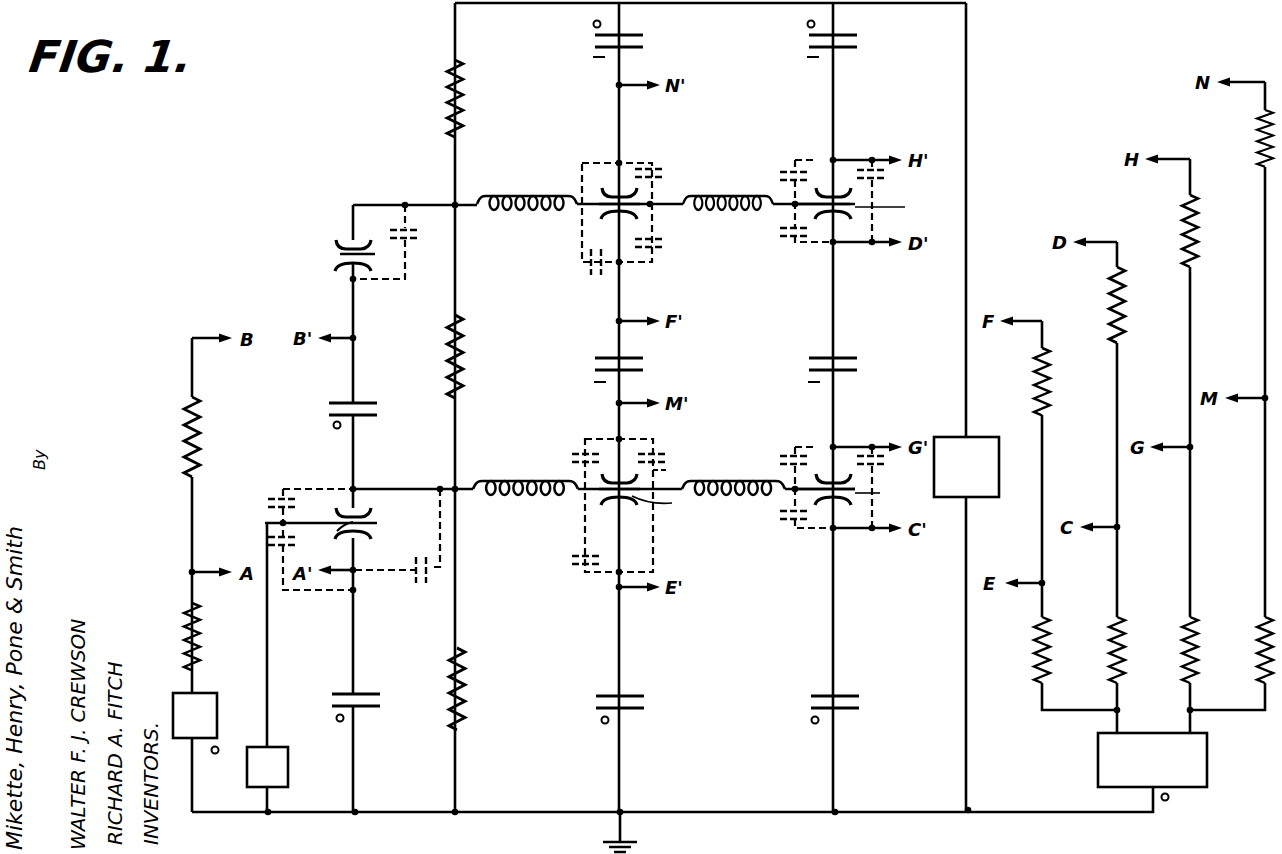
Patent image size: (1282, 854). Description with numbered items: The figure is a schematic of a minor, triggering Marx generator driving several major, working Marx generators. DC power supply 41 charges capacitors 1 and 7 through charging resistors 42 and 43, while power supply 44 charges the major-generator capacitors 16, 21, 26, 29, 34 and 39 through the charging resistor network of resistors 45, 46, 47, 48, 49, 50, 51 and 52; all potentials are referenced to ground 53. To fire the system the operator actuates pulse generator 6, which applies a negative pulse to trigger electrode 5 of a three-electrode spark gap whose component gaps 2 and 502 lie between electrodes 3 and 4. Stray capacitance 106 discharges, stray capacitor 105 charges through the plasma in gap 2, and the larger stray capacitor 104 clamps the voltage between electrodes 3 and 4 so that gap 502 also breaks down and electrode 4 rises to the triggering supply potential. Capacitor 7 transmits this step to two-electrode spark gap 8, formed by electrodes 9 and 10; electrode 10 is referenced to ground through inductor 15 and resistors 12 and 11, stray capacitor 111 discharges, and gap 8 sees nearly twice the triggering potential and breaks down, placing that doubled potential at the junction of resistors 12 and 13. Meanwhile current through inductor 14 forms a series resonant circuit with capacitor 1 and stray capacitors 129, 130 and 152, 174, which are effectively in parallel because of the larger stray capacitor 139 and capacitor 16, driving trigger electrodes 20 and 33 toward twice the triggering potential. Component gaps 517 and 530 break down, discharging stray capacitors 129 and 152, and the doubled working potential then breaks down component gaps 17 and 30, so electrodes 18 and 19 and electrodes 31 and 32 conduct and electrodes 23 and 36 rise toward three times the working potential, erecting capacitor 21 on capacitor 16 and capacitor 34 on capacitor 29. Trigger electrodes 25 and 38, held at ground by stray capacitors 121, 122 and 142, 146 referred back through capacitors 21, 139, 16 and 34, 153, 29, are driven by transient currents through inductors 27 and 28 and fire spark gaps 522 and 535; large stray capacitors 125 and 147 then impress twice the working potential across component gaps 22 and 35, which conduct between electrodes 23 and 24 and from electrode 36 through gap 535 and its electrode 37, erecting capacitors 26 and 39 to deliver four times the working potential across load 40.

The capacitor 1 is at (381, 700).
The spark gap 2 is at (337, 531).
The electrode 3 is at (370, 535).
The electrode 4 is at (364, 514).
The trigger electrode 5 is at (377, 523).
The pulse generator 6 is at (288, 770).
The capacitor 7 is at (378, 408).
The spark gap 8 is at (340, 254).
The spark gap electrode 9 is at (338, 266).
The switch electrode 10 is at (336, 240).
The resistor 11 is at (464, 680).
The resistor 12 is at (462, 350).
The resistor 13 is at (452, 70).
The inductor 14 is at (490, 481).
The inductor 15 is at (490, 196).
The capacitor 16 is at (644, 703).
The spark gap 17 is at (600, 492).
The electrode 18 is at (606, 502).
The electrode 19 is at (602, 474).
The trigger element 20 is at (666, 510).
The capacitor 21 is at (640, 365).
The component gap 22 is at (600, 206).
The electrode 23 is at (605, 215).
The electrode 24 is at (602, 188).
The trigger electrode 25 is at (652, 207).
The capacitor 26 is at (640, 42).
The inductor 27 is at (720, 481).
The inductor 28 is at (700, 196).
The capacitor 29 is at (859, 703).
The component gap 30 is at (800, 495).
The gap electrode 31 is at (825, 502).
The electrode 32 is at (816, 474).
The trigger electrode 33 is at (884, 495).
The capacitor 34 is at (856, 365).
The component gap 35 is at (800, 210).
The gap electrode 36 is at (825, 215).
The anode 37 is at (816, 188).
The trigger electrode 38 is at (895, 213).
The capacitor 39 is at (854, 42).
The load 40 is at (975, 497).
The DC power supply 41 is at (217, 715).
The charging resistor 42 is at (199, 645).
The charging resistor 43 is at (199, 440).
The power supply 44 is at (1207, 763).
The charging resistor 45 is at (1034, 640).
The charging resistor 46 is at (1049, 385).
The charging resistor 47 is at (1124, 650).
The charging resistor 48 is at (1124, 300).
The charging resistor 49 is at (1197, 665).
The charging resistor 50 is at (1197, 235).
The charging resistor 51 is at (1257, 648).
The charging resistor 52 is at (1257, 135).
The ground 53 is at (640, 840).
The stray capacitor 104 is at (415, 585).
The stray capacitor 105 is at (268, 502).
The stray capacitance 106 is at (268, 543).
The stray capacitor 111 is at (412, 200).
The stray capacitor 121 is at (655, 162).
The stray capacitor 122 is at (658, 252).
The stray capacitor 125 is at (590, 272).
The stray capacitor 129 is at (575, 455).
The stray capacitor 130 is at (572, 565).
The stray capacitor 139 is at (668, 455).
The stray capacitor 142 is at (782, 172).
The stray capacitor 146 is at (790, 243).
The stray capacitor 147 is at (872, 155).
The stray capacitor 152 is at (790, 455).
The stray capacitor 153 is at (872, 440).
The stray capacitor 174 is at (790, 525).
The spark gap component 502 is at (345, 505).
The component gap 517 is at (681, 463).
The spark gap 522 is at (585, 200).
The component gap 530 is at (790, 485).
The component gap 535 is at (790, 200).